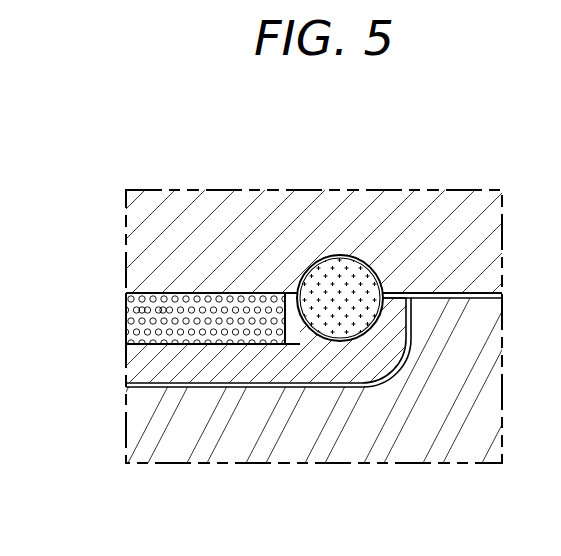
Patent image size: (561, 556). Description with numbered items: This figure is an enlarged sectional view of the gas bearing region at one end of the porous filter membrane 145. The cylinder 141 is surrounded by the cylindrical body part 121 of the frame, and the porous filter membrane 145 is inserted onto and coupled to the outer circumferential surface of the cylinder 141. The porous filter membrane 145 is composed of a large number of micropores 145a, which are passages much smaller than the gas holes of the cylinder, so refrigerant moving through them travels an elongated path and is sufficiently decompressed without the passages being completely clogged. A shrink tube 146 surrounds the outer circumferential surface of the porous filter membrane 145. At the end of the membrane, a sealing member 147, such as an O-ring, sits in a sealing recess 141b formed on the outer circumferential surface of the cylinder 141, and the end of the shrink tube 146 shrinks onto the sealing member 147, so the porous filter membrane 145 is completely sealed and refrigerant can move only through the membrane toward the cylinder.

The body part 121 is at (245, 470).
The cylinder 141 is at (258, 232).
The sealing recess 141b is at (330, 262).
The porous filter membrane 145 is at (127, 322).
The micropores 145a is at (163, 308).
The shrink tube 146 is at (148, 362).
The sealing member 147 is at (353, 297).